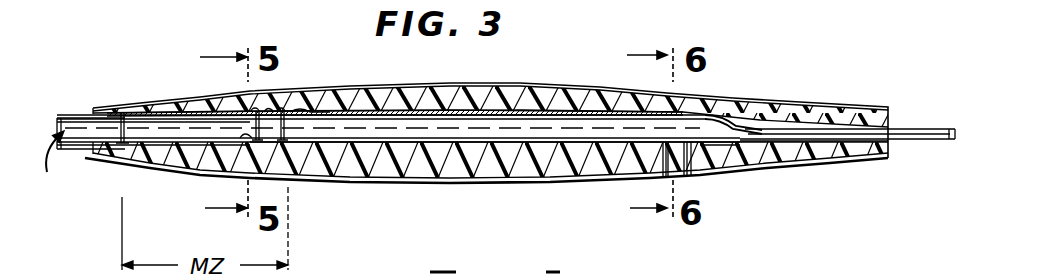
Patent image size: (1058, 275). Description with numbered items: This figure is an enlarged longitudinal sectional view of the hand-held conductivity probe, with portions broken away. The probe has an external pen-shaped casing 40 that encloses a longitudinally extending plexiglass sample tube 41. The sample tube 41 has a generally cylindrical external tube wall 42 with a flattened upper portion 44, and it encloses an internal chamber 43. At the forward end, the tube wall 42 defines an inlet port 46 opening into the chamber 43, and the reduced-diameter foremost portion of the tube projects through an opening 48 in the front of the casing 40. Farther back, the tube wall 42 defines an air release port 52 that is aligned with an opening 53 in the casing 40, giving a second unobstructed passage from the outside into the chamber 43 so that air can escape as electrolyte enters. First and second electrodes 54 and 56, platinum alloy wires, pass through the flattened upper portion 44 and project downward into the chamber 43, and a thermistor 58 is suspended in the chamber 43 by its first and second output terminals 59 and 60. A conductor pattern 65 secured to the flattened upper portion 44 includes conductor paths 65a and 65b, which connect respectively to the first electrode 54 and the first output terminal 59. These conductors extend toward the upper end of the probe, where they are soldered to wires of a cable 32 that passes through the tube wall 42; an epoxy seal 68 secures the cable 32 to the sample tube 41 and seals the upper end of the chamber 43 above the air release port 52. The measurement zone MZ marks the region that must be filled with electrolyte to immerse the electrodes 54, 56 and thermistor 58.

The cable 32 is at (940, 133).
The external pen-shaped casing 40 is at (398, 90).
The sample tube 41 is at (435, 152).
The external tube wall 42 is at (518, 144).
The internal chamber 43 is at (382, 134).
The flattened upper portion 44 is at (690, 118).
The inlet port 46 is at (59, 164).
The opening 48 is at (92, 152).
The air release port 52 is at (698, 145).
The opening 53 is at (673, 170).
The first electrode 54 is at (121, 142).
The second electrode 56 is at (248, 134).
The thermistor 58 is at (330, 116).
The first output terminal 59 is at (298, 110).
The second output terminal 60 is at (271, 110).
The conductor pattern 65 is at (493, 106).
The conductor path 65a is at (149, 110).
The conductor path 65b is at (538, 112).
The epoxy seal 68 is at (763, 157).